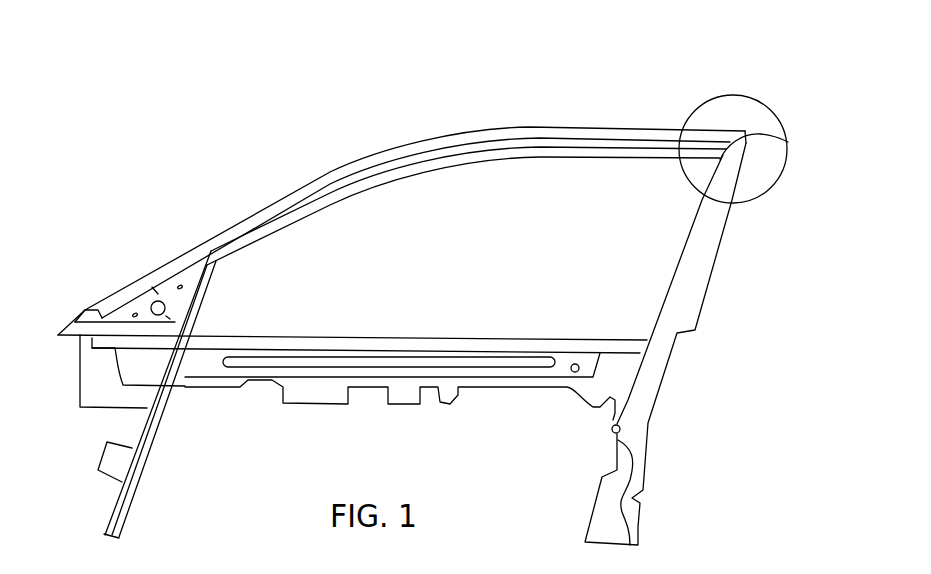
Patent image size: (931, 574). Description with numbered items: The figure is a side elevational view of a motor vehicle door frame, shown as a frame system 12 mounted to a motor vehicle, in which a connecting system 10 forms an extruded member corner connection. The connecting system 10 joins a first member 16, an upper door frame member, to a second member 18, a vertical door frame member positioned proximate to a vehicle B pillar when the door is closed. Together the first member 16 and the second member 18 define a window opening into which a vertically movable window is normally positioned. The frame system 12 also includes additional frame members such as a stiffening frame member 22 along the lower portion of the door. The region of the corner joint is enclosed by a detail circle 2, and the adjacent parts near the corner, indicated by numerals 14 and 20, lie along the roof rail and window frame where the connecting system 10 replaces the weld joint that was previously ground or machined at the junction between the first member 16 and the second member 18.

The detail region (FIG. 2 view) 2 is at (783, 122).
The connecting system 10 is at (725, 132).
The frame system 12 is at (636, 72).
The pillar cap / reinforcement 14 is at (788, 141).
The first member 16 is at (553, 130).
The second member 18 is at (707, 242).
The roof frame / header 20 is at (480, 181).
The stiffening frame member 22 is at (502, 387).